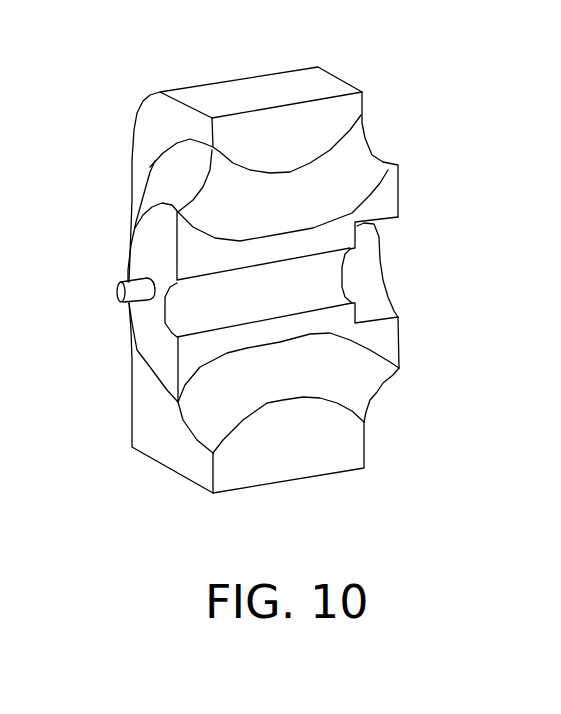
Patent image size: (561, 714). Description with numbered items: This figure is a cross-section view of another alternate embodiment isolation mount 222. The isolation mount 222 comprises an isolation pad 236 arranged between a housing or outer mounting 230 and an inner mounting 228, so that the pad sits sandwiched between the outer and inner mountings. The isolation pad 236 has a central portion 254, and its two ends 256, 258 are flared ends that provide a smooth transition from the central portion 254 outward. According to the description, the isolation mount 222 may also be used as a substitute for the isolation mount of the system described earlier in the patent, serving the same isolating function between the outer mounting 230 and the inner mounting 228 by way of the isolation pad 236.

The isolation mount 222 is at (104, 105).
The outer mounting 230 is at (307, 110).
The isolation pad 236 is at (357, 168).
The inner mounting 228 is at (393, 197).
The end 258 is at (360, 382).
The end 256 is at (210, 413).
The central portion 254 is at (283, 383).